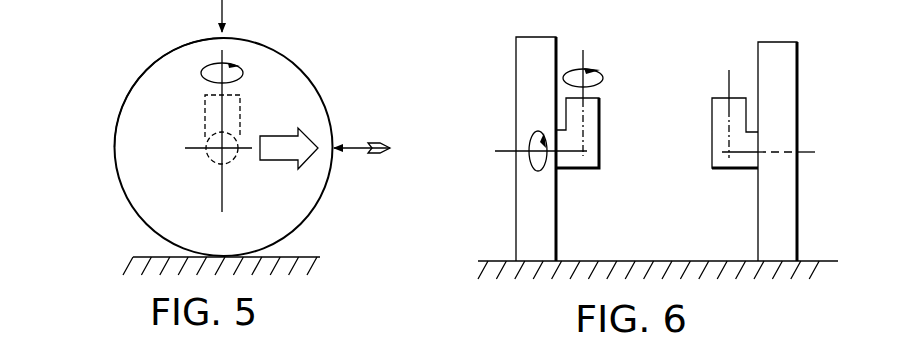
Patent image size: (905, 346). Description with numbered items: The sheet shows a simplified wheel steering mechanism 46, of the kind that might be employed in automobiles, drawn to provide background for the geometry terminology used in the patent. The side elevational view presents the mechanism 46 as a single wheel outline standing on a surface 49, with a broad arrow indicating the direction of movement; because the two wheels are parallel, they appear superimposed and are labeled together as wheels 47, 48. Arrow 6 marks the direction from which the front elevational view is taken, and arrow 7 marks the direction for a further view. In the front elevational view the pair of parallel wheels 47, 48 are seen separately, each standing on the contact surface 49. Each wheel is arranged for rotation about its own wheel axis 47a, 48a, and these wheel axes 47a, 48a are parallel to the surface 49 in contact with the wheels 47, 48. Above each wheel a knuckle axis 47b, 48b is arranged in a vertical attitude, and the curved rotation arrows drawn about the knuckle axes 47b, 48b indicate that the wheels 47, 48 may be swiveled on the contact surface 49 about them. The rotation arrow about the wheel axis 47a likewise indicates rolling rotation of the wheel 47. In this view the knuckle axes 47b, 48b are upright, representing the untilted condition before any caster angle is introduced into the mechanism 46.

In FIG. 5, the arrow 6 is at (367, 137).
In FIG. 5, the arrow 7 is at (212, 16).
In FIG. 5, the wheel steering mechanism 46 is at (319, 93).
In FIG. 5, the wheel 47 is at (124, 92).
In FIG. 6, the wheel 47 is at (551, 126).
In FIG. 6, the wheel axis 47a is at (501, 150).
In FIG. 6, the knuckle axis 47b is at (651, 60).
In FIG. 5, the wheel 48 is at (116, 131).
In FIG. 6, the wheel 48 is at (792, 129).
In FIG. 6, the wheel axis 48a is at (873, 148).
In FIG. 6, the knuckle axis 48b is at (728, 84).
In FIG. 5, the surface 49 is at (275, 257).
In FIG. 6, the surface 49 is at (608, 261).